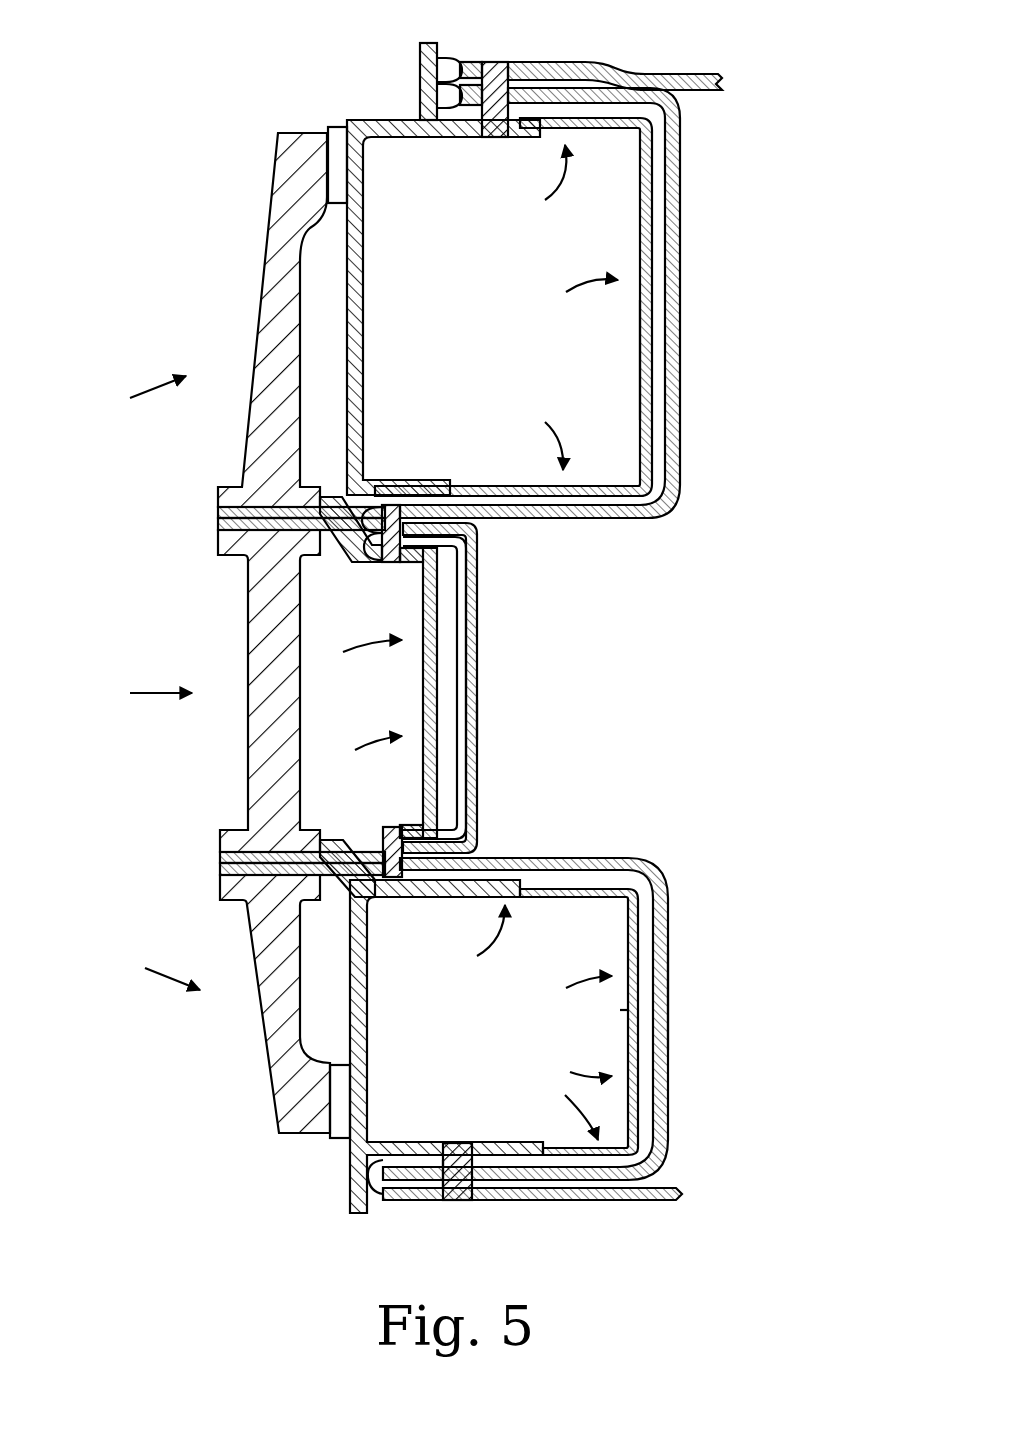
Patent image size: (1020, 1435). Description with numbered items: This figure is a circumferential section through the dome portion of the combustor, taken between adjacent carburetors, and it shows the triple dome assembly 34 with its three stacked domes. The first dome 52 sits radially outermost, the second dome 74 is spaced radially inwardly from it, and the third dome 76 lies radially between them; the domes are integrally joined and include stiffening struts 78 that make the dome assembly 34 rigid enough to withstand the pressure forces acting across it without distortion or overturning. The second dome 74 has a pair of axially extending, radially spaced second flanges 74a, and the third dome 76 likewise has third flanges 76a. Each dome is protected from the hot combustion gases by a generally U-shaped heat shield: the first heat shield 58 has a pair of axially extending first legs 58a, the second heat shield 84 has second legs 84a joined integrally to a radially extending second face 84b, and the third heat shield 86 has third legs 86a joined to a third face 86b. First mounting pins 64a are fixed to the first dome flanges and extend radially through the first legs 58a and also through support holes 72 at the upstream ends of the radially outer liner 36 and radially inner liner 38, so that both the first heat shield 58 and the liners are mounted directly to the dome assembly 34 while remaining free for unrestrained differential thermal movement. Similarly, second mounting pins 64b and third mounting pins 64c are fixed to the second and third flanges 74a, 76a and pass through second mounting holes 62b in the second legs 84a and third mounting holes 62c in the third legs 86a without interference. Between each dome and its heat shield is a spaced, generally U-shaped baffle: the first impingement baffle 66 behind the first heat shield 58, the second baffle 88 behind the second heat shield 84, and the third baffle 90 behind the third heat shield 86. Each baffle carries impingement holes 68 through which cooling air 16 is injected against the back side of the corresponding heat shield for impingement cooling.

The cooling air 16 is at (550, 180).
The dome assembly 34 is at (387, 95).
The radially outer liner 36 is at (662, 73).
The radially inner liner 38 is at (562, 1201).
The first dome 52 is at (350, 116).
The first heat shield 58 is at (684, 452).
The first legs 58a is at (607, 521).
The second mounting holes 62b is at (444, 1170).
The third mounting holes 62c is at (389, 507).
The first mounting pins 64a is at (492, 62).
The second mounting pins 64b is at (457, 1200).
The third mounting pins 64c is at (390, 828).
The first impingement baffle 66 is at (638, 364).
The impingement holes 68 is at (640, 230).
The support holes 72 is at (527, 64).
The second dome 74 is at (369, 1040).
The second flanges 74a is at (433, 898).
The third dome 76 is at (355, 562).
The third flanges 76a is at (406, 563).
The stiffening struts 78 is at (248, 418).
The second heat shield 84 is at (616, 864).
The second legs 84a is at (545, 858).
The second face 84b is at (669, 1000).
The third heat shield 86 is at (479, 656).
The third legs 86a is at (474, 548).
The third face 86b is at (479, 722).
The second baffle 88 is at (628, 905).
The third baffle 90 is at (440, 607).